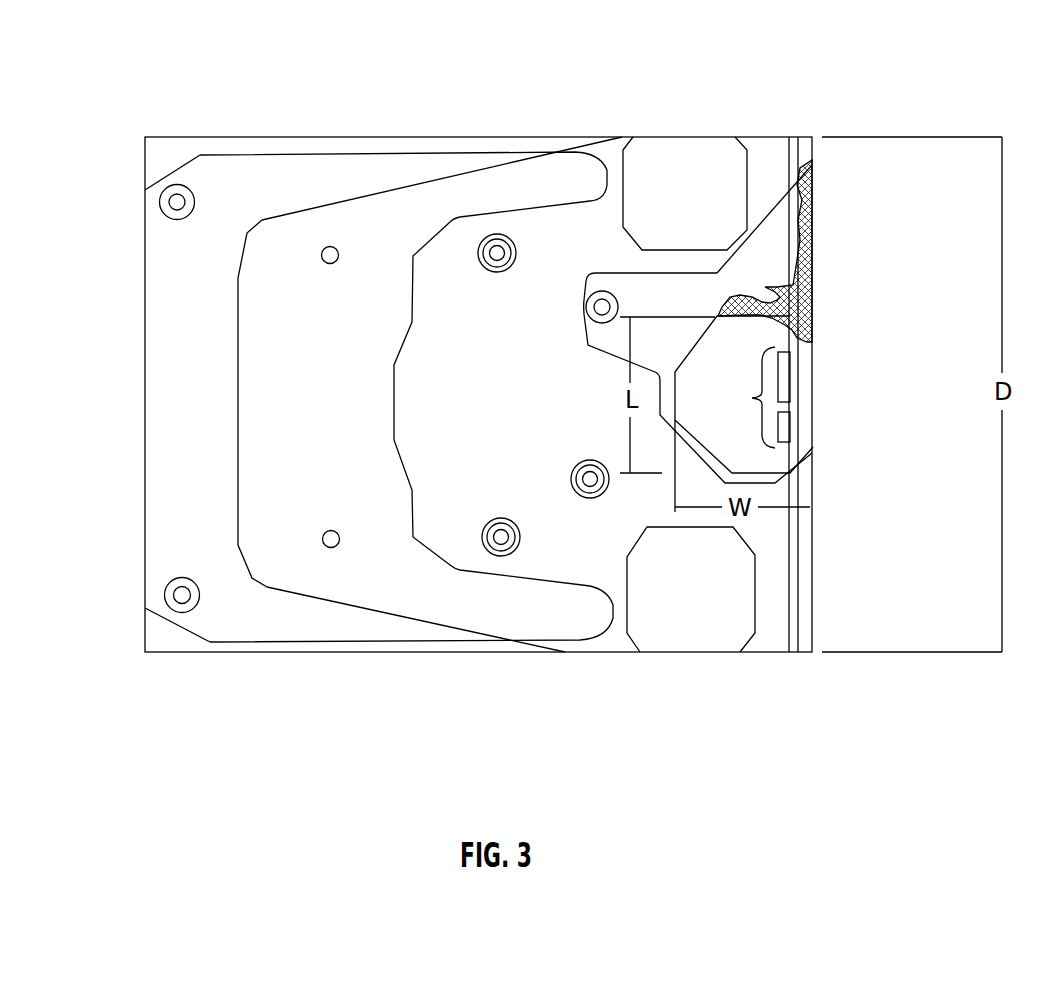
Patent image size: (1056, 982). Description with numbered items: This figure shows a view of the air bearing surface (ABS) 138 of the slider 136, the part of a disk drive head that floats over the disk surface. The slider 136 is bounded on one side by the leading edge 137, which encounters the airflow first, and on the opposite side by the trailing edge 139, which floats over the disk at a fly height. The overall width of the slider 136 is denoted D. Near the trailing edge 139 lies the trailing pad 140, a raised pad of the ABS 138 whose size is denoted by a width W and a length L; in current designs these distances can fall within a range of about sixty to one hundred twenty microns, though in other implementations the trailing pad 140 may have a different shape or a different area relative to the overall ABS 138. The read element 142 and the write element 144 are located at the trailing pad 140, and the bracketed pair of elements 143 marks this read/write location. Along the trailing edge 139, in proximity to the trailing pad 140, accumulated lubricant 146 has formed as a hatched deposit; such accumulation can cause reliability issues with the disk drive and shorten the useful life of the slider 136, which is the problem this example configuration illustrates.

The slider 136 is at (318, 82).
The leading edge 137 is at (144, 407).
The air bearing surface 138 is at (477, 137).
The trailing edge 139 is at (813, 548).
The trailing pad 140 is at (790, 462).
The read element 142 is at (783, 428).
The slots 143 is at (746, 397).
The write element 144 is at (786, 378).
The accumulated lubricant 146 is at (812, 295).